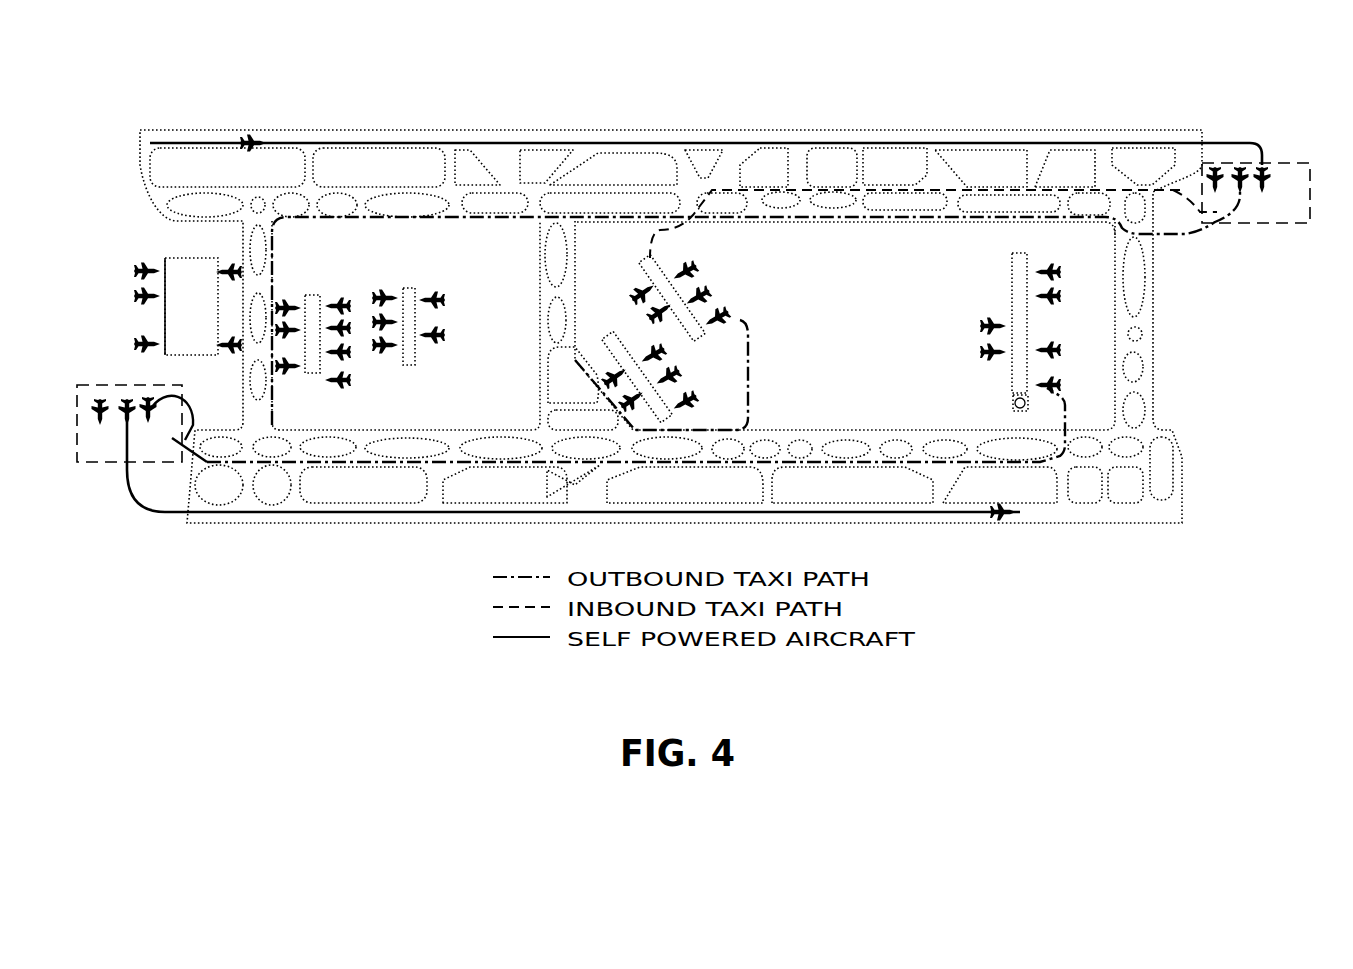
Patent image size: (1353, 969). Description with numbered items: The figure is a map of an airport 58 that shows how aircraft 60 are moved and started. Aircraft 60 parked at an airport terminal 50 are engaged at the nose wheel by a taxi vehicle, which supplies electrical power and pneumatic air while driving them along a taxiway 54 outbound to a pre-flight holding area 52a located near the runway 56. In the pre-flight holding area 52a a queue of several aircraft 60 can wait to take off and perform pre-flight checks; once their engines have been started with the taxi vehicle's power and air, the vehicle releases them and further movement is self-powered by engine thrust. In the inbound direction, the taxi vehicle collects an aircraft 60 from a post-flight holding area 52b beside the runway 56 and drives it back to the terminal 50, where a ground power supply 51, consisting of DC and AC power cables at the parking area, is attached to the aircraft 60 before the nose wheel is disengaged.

The airport 58 is at (800, 58).
The runway 56 is at (358, 130).
The taxiway 54 is at (160, 197).
The airport terminal 50 is at (186, 258).
The aircraft 60 is at (338, 302).
The ground power supply 51 is at (1005, 410).
The pre-flight holding area 52a is at (98, 465).
The post-flight holding area 52b is at (1285, 162).